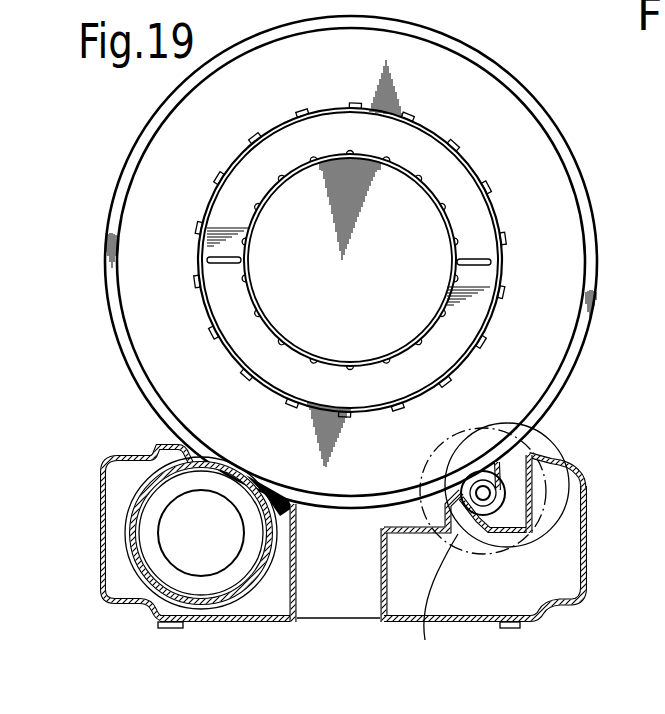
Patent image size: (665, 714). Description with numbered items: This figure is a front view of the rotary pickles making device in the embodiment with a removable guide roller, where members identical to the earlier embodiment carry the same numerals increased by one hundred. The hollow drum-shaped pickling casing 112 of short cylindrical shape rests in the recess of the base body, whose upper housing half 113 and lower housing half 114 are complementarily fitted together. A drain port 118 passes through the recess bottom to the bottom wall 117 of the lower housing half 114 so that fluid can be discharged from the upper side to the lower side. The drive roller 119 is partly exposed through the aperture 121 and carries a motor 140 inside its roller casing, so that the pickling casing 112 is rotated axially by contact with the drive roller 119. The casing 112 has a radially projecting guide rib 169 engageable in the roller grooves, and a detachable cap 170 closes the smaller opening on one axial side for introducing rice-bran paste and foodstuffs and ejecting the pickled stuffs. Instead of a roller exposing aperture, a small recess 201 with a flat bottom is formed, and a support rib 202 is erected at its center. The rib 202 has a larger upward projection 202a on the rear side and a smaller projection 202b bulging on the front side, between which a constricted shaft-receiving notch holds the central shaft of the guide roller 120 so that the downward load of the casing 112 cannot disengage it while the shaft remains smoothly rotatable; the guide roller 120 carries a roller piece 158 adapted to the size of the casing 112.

The pickling casing 112 is at (361, 341).
The upper housing half 113 is at (585, 506).
The lower housing half 114 is at (580, 580).
The bottom wall of lower housing half 117 is at (265, 622).
The drain port 118 is at (340, 597).
The drive roller 119 is at (134, 578).
The guide roller 120 is at (482, 470).
The aperture 121 is at (188, 448).
The motor 140 is at (200, 557).
The roller piece 158 is at (500, 484).
The guide rib 169 is at (598, 277).
The detachable cap 170 is at (482, 240).
The small recess 201 is at (496, 544).
The support rib 202 is at (517, 484).
The larger upward projection 202a is at (542, 456).
The smaller projection 202b is at (470, 478).